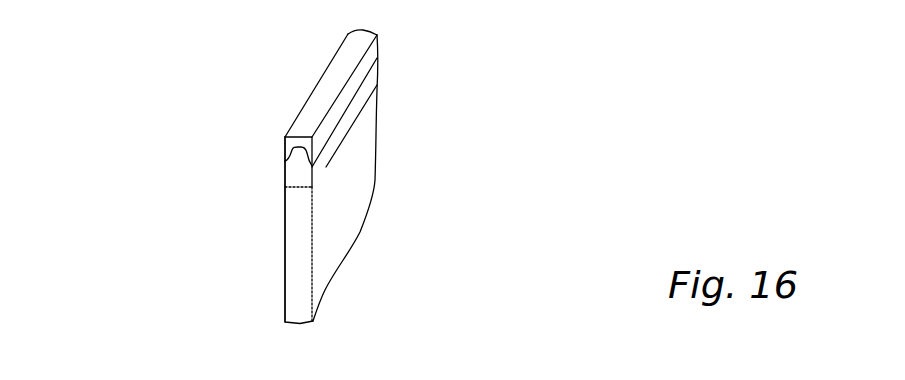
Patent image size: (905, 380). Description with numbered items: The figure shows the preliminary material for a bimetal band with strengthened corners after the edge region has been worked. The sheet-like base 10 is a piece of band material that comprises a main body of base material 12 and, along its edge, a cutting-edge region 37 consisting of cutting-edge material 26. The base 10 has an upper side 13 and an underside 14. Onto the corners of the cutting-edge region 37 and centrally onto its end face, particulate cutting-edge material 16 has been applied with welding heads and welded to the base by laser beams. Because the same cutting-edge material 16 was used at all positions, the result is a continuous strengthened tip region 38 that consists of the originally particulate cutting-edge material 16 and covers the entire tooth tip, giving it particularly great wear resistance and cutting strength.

The sheet-like base 10 is at (275, 265).
The main body of base material 12 is at (302, 267).
The upper side 13 is at (262, 196).
The underside 14 is at (360, 202).
The particulate cutting-edge material 16 is at (313, 136).
The cutting-edge material 26 is at (306, 173).
The cutting-edge region 37 is at (293, 168).
The strengthened tip region 38 is at (290, 140).